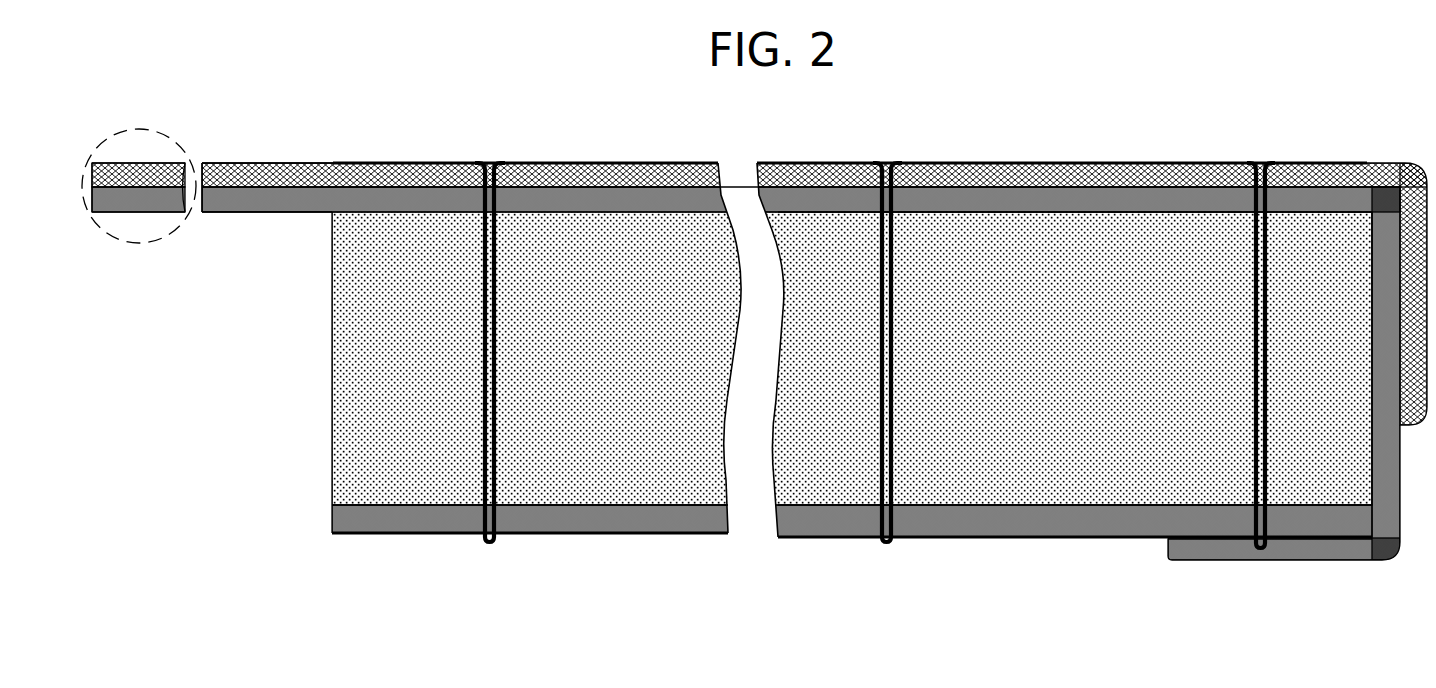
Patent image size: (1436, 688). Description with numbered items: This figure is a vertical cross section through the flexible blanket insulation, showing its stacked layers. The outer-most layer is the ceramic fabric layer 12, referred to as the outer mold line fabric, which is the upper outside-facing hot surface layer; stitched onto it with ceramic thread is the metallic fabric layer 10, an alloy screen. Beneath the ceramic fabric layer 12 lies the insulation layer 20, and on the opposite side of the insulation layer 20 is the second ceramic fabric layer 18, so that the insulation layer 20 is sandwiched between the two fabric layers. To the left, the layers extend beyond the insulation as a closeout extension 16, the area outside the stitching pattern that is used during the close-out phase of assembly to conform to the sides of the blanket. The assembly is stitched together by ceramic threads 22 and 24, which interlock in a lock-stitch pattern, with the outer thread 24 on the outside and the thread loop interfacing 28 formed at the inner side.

The metallic fabric layer 10 is at (300, 163).
The ceramic fabric layer 12 is at (272, 213).
The closeout extension 16 is at (231, 152).
The second ceramic fabric layer 18 is at (597, 535).
The insulation layer 20 is at (332, 380).
The ceramic thread 22 is at (823, 539).
The outer thread 24 is at (510, 162).
The thread loop interfacing 28 is at (476, 545).